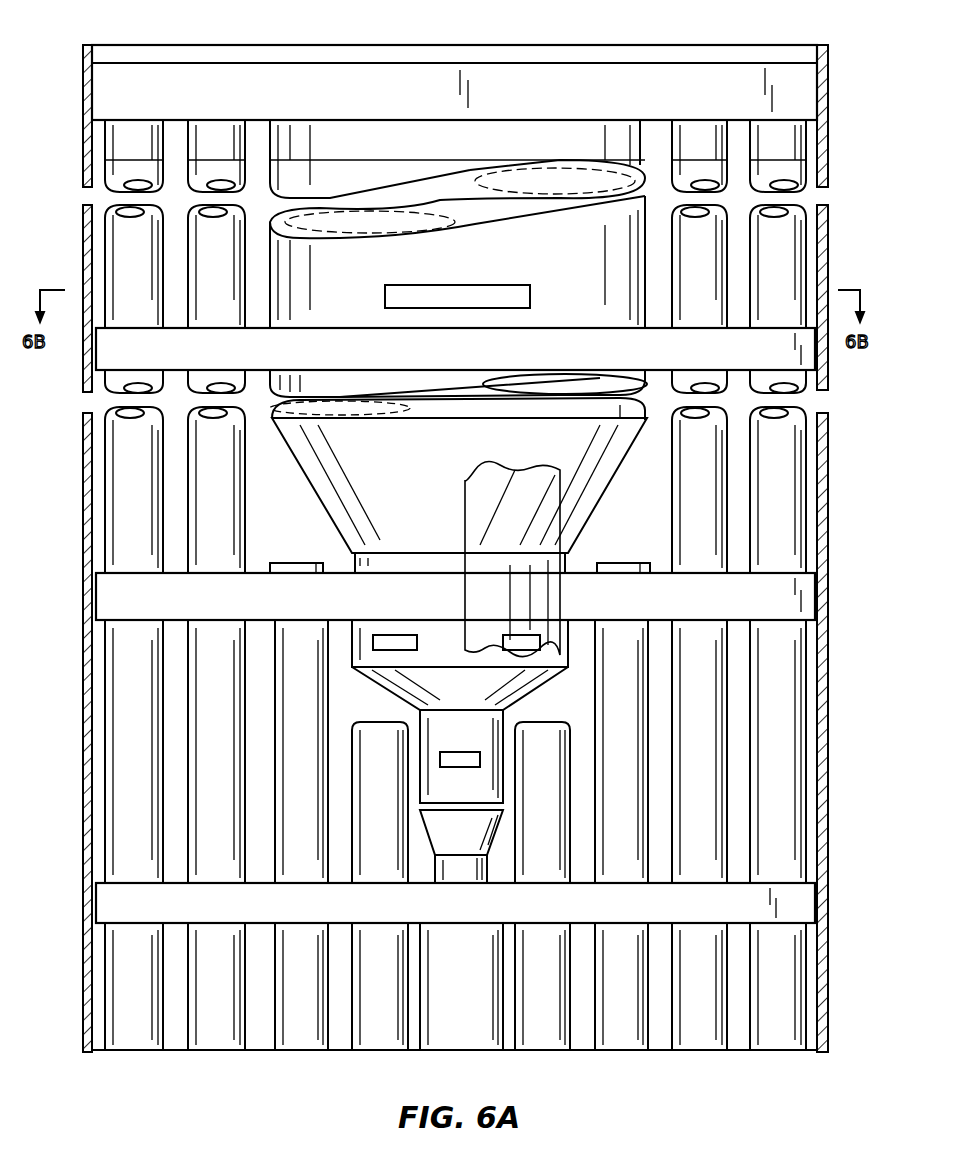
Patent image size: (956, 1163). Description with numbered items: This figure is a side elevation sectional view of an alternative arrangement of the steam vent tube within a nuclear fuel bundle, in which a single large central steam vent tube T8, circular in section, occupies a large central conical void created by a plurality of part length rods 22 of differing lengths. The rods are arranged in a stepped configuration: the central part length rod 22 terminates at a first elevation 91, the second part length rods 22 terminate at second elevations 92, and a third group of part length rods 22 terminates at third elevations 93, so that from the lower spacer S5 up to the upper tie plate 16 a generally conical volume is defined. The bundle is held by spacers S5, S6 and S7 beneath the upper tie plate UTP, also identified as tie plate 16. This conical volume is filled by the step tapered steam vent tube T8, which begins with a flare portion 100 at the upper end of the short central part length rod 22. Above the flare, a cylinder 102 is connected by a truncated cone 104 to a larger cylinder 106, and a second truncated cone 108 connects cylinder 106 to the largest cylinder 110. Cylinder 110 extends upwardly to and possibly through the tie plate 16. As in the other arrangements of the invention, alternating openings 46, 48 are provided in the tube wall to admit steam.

The upper tie plate 16 is at (795, 75).
The upper tube plate UTP is at (175, 85).
The support plate 7 S7 is at (110, 355).
The support plate 6 S6 is at (110, 600).
The lower spacer S5 is at (110, 900).
The part length rods 22 is at (308, 782).
The cylinder 110 is at (528, 279).
The steam vent tube T8 is at (352, 300).
The openings 46 is at (432, 285).
The second truncated cone 108 is at (445, 499).
The cylinder 106 is at (457, 652).
The openings 48 is at (393, 635).
The third elevations 93 is at (305, 563).
The truncated cone 104 is at (478, 696).
The cylinder 102 is at (484, 739).
The flare portion 100 is at (475, 839).
The first elevation 91 is at (460, 857).
The second elevations 92 is at (376, 722).